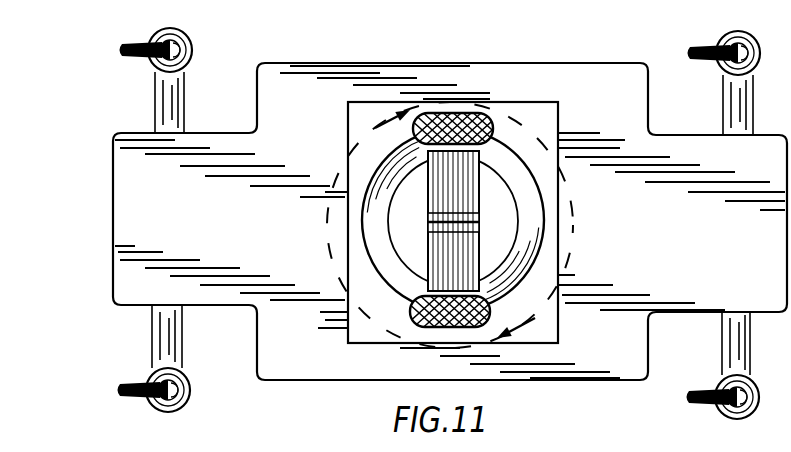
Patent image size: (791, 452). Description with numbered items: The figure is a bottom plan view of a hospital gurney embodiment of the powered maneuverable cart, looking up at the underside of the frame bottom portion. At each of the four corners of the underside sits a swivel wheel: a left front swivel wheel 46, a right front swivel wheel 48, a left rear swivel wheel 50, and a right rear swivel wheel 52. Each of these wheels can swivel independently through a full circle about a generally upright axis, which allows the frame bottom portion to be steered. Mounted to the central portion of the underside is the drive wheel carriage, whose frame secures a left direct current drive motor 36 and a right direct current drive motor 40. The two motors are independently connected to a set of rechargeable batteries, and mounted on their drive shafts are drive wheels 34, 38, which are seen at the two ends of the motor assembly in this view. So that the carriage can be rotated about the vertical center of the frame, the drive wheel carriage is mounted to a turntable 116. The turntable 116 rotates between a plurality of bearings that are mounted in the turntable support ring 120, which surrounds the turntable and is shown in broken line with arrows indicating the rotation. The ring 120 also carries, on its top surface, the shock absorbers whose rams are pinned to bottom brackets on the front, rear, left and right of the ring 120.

The drive wheel 34 is at (434, 115).
The left direct current drive motor 36 is at (467, 178).
The drive wheel 38 is at (613, 430).
The right direct current drive motor 40 is at (467, 230).
The left front swivel wheel 46 is at (692, 55).
The right front swivel wheel 48 is at (690, 396).
The left rear swivel wheel 50 is at (125, 48).
The right rear swivel wheel 52 is at (120, 388).
The turntable 116 is at (378, 238).
The turntable support ring 120 is at (517, 137).